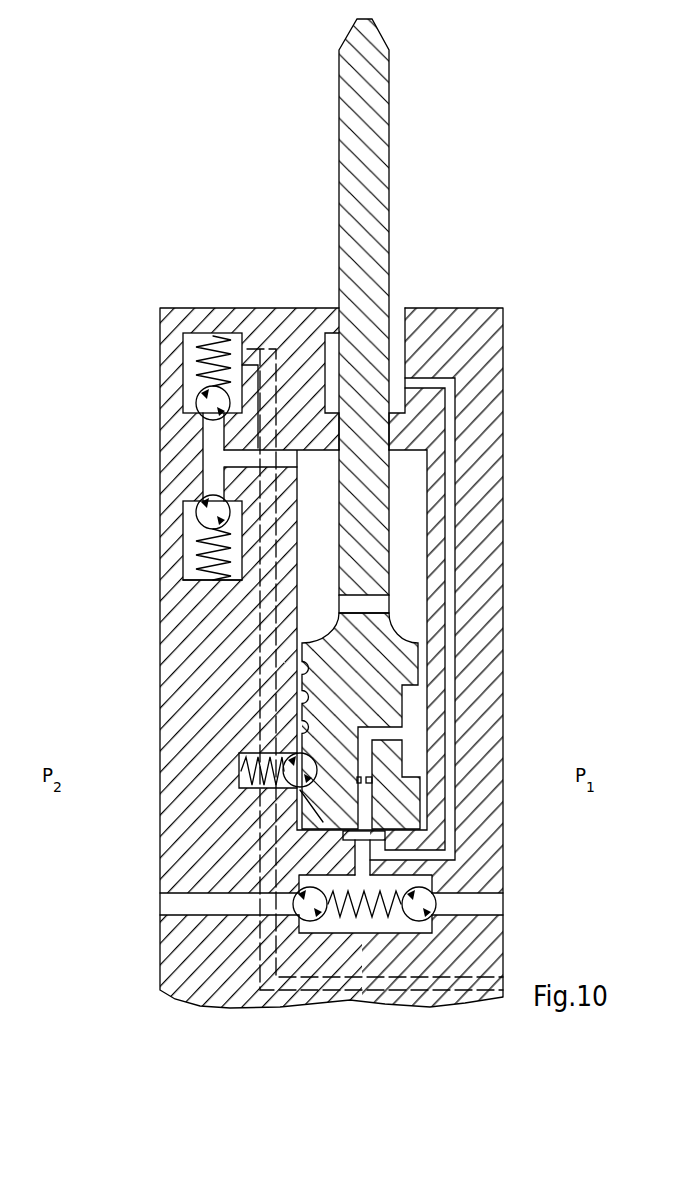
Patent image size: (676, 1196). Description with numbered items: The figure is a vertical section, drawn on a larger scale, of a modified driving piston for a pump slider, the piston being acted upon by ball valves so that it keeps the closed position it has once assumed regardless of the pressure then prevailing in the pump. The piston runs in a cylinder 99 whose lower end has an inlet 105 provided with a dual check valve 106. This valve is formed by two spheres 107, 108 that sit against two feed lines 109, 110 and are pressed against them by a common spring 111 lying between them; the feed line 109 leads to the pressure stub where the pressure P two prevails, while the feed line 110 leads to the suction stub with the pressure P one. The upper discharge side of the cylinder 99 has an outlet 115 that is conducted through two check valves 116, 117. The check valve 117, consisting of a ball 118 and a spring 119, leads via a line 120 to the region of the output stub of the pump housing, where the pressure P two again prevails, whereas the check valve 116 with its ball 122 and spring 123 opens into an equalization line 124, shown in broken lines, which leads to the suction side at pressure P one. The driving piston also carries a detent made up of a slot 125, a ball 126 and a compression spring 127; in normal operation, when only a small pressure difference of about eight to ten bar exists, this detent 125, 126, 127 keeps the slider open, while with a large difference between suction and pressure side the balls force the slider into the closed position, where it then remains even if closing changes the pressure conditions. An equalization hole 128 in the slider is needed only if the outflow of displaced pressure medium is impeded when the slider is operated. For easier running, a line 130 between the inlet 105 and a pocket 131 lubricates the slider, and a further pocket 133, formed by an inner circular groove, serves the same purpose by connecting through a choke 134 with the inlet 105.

The cylinder 99 is at (412, 517).
The inlet 105 is at (343, 835).
The dual check valve 106 is at (397, 927).
The sphere 107 is at (312, 927).
The sphere 108 is at (418, 927).
The feed line 109 is at (190, 907).
The feed line 110 is at (480, 905).
The common spring 111 is at (357, 922).
The outlet 115 is at (283, 461).
The check valve 116 is at (188, 360).
The check valve 117 is at (185, 535).
The ball 118 is at (200, 512).
The spring 119 is at (260, 553).
The line 120 is at (183, 568).
The ball 122 is at (197, 405).
The spring 123 is at (218, 340).
The equalization line 124 is at (270, 350).
The slot 125 is at (300, 793).
The ball 126 is at (297, 753).
The compression spring 127 is at (240, 760).
The equalization hole 128 is at (356, 603).
The line 130 is at (450, 537).
The pocket 131 is at (406, 309).
The pocket 133 is at (418, 735).
The choke 134 is at (377, 797).